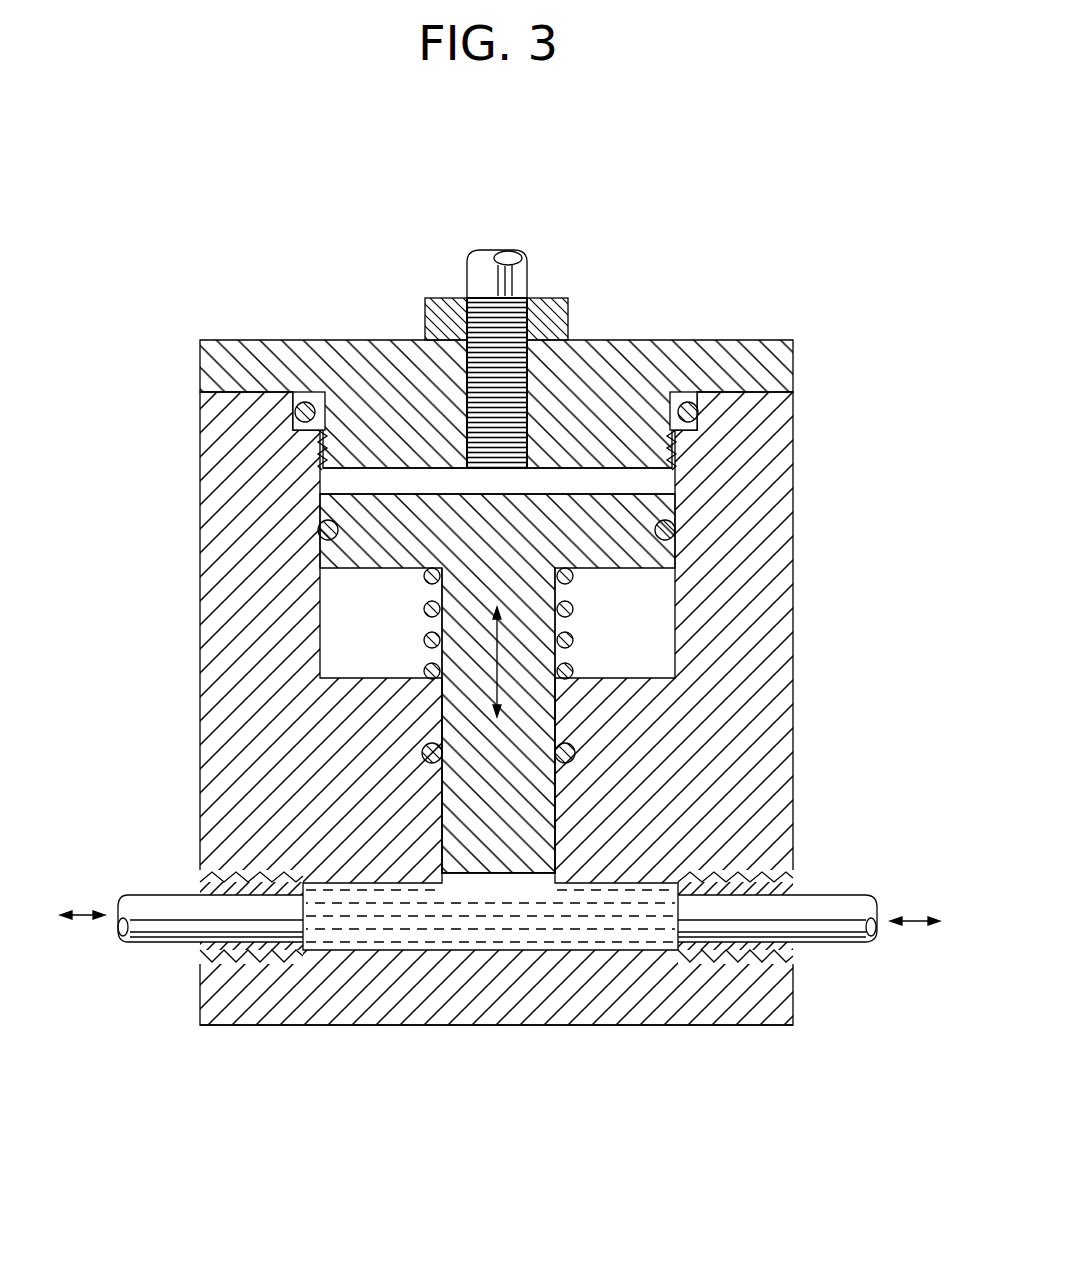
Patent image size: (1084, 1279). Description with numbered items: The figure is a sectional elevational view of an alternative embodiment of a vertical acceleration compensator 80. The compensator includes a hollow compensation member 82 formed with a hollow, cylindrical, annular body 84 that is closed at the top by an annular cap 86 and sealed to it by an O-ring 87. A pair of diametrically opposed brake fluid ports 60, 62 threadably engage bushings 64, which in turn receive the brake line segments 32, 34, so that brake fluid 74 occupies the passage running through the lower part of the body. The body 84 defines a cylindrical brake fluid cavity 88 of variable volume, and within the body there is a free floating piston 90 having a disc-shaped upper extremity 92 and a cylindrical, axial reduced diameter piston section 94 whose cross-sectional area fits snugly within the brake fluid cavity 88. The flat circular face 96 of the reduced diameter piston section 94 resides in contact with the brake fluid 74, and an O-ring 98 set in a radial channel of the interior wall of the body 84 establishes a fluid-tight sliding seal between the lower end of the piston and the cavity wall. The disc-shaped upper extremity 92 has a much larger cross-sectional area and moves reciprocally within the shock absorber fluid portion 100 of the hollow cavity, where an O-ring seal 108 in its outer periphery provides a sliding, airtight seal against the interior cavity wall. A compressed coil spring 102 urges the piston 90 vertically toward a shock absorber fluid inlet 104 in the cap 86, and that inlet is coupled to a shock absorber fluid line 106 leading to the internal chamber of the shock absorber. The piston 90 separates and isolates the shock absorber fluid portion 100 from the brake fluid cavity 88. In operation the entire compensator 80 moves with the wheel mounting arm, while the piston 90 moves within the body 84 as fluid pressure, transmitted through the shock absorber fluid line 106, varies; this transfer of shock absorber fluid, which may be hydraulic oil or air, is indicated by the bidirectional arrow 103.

The brake line segment 32 is at (822, 932).
The brake line segment 34 is at (162, 900).
The brake fluid port 60 is at (725, 947).
The brake fluid port 62 is at (228, 882).
The bushing 64 is at (258, 960).
The brake fluid 74 is at (375, 925).
The vertical acceleration compensator 80 is at (712, 255).
The hollow compensation member 82 is at (442, 1044).
The annular body 84 is at (793, 728).
The annular cap 86 is at (676, 340).
The O-ring 87 is at (295, 408).
The brake fluid cavity 88 is at (535, 880).
The free floating piston 90 is at (605, 488).
The disc-shaped upper extremity 92 is at (373, 505).
The reduced diameter piston section 94 is at (555, 800).
The flat circular face 96 is at (490, 875).
The O-ring 98 is at (575, 753).
The shock absorber fluid portion 100 is at (320, 478).
The compressed coil spring 102 is at (575, 640).
The bidirectional arrow 103 is at (497, 186).
The shock absorber fluid inlet 104 is at (518, 378).
The shock absorber fluid line 106 is at (490, 268).
The O-ring seal 108 is at (320, 538).